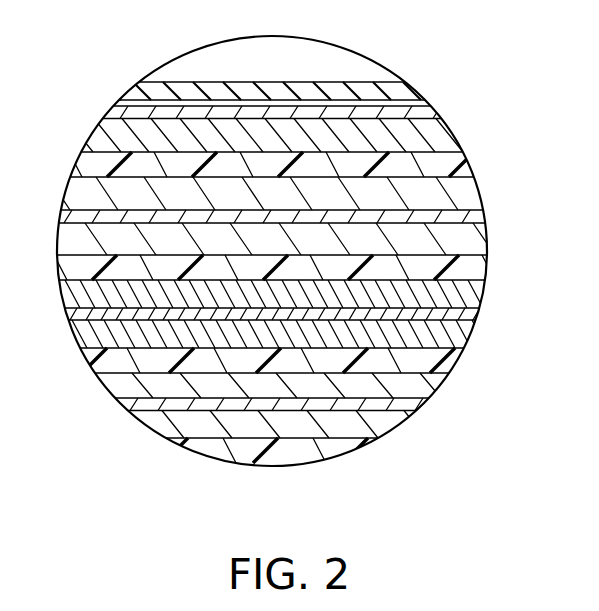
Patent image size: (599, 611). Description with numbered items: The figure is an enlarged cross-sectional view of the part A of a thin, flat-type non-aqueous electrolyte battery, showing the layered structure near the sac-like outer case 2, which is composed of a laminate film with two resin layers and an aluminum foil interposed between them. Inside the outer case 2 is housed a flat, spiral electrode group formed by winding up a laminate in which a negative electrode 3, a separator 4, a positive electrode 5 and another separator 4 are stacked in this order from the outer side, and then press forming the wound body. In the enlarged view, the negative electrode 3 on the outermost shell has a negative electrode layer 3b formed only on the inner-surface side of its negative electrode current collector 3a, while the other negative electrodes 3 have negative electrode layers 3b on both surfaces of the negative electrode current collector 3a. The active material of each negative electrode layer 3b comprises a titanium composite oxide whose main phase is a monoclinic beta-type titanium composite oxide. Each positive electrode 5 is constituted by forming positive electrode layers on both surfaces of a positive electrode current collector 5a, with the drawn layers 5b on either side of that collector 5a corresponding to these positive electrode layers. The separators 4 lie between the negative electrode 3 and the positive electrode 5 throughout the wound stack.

The part A is at (172, 73).
The outer case 2 is at (413, 83).
The negative electrode 3 is at (301, 226).
The negative electrode current collector 3a is at (433, 116).
The negative electrode layer 3b is at (450, 140).
The separator 4 is at (88, 163).
The positive electrode 5 is at (299, 335).
The positive electrode current collector 5a is at (462, 221).
The second sub-layer 5b is at (458, 186).